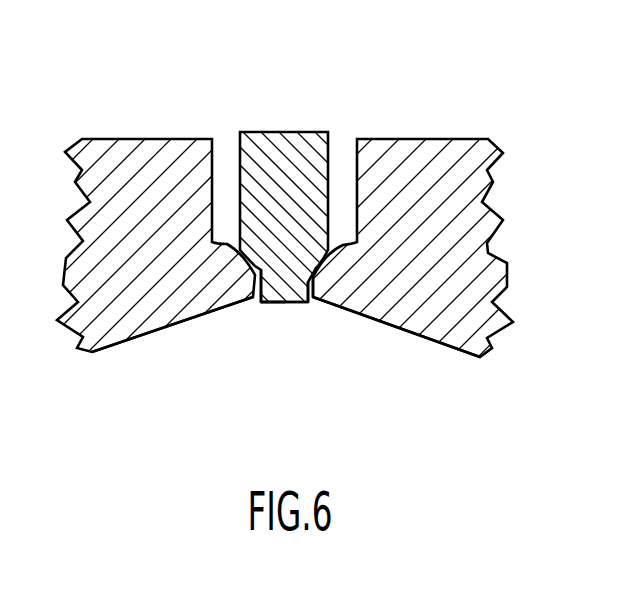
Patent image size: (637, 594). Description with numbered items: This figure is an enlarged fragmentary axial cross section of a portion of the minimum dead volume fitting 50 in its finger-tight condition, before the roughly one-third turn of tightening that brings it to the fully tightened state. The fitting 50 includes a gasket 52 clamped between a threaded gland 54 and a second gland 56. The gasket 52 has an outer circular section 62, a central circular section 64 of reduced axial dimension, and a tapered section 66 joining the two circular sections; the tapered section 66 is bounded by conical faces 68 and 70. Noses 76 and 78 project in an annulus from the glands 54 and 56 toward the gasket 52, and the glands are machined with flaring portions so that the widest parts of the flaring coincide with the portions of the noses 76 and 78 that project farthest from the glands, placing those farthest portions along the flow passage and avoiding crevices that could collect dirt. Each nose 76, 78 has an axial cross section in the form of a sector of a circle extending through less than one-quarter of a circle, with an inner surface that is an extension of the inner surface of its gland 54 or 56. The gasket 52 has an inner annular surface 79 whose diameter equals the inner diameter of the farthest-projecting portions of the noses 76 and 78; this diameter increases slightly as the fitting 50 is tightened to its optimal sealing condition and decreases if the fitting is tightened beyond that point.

The fitting 50 is at (172, 52).
The gasket 52 is at (278, 124).
The threaded gland 54 is at (125, 139).
The gland 56 is at (452, 139).
The outer circular section 62 is at (333, 150).
The central circular section 64 is at (287, 304).
The tapered section 66 is at (308, 303).
The conical face 68 is at (260, 303).
The conical face 70 is at (312, 300).
The nose 76 is at (213, 303).
The nose 78 is at (314, 299).
The inner annular surface 79 is at (274, 304).